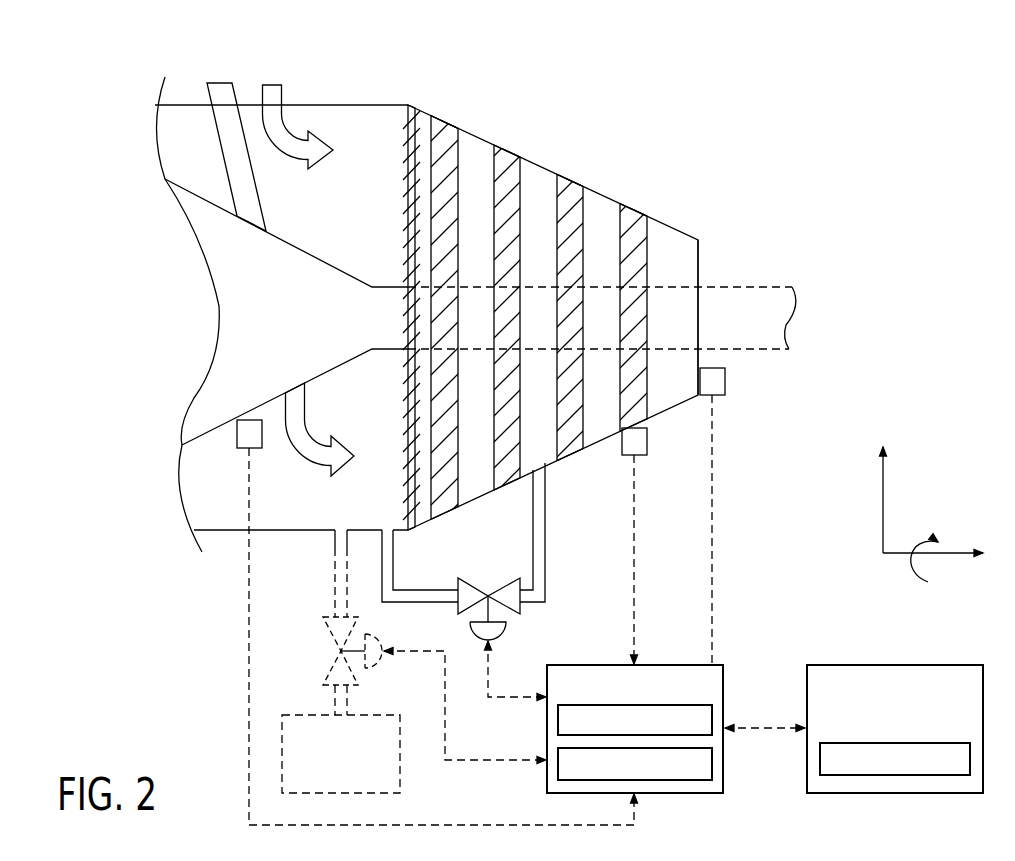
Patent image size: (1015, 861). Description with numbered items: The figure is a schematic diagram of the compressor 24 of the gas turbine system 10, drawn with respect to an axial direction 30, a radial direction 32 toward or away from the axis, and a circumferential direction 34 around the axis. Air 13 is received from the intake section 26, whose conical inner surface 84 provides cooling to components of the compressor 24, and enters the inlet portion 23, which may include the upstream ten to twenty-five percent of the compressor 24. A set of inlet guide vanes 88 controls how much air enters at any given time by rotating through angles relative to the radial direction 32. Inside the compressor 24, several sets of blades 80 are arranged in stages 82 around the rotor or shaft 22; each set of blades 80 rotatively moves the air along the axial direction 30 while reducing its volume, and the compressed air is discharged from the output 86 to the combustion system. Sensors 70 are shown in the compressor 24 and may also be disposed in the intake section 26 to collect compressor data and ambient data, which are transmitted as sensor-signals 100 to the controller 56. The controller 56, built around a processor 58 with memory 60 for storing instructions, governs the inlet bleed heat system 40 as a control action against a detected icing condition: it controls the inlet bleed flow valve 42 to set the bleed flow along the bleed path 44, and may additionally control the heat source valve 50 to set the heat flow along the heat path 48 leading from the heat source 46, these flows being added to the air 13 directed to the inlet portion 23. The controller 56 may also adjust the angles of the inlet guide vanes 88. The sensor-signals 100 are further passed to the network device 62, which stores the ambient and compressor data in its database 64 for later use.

The gas turbine system 10 is at (353, 42).
The air 13 is at (268, 152).
The shaft 22 is at (731, 350).
The inlet portion 23 is at (417, 93).
The compressor 24 is at (647, 84).
The intake section 26 is at (279, 63).
The axial direction 30 is at (905, 554).
The radial direction 32 is at (883, 497).
The circumferential direction 34 is at (926, 528).
The inlet bleed heat system 40 is at (428, 762).
The inlet bleed flow valve 42 is at (503, 632).
The bleed path 44 is at (546, 530).
The heat source 46 is at (310, 714).
The heat path 48 is at (347, 708).
The heat source valve 50 is at (379, 640).
The controller 56 is at (604, 665).
The processor 58 is at (682, 781).
The memory 60 is at (558, 719).
The network device 62 is at (960, 665).
The database 64 is at (893, 776).
The sensors 70 is at (262, 432).
The sets of blades 80 is at (432, 117).
The stages 82 is at (452, 123).
The conical inner surface 84 is at (302, 249).
The output 86 is at (699, 256).
The inlet guide vanes 88 is at (399, 374).
The sensor-signals 100 is at (538, 825).